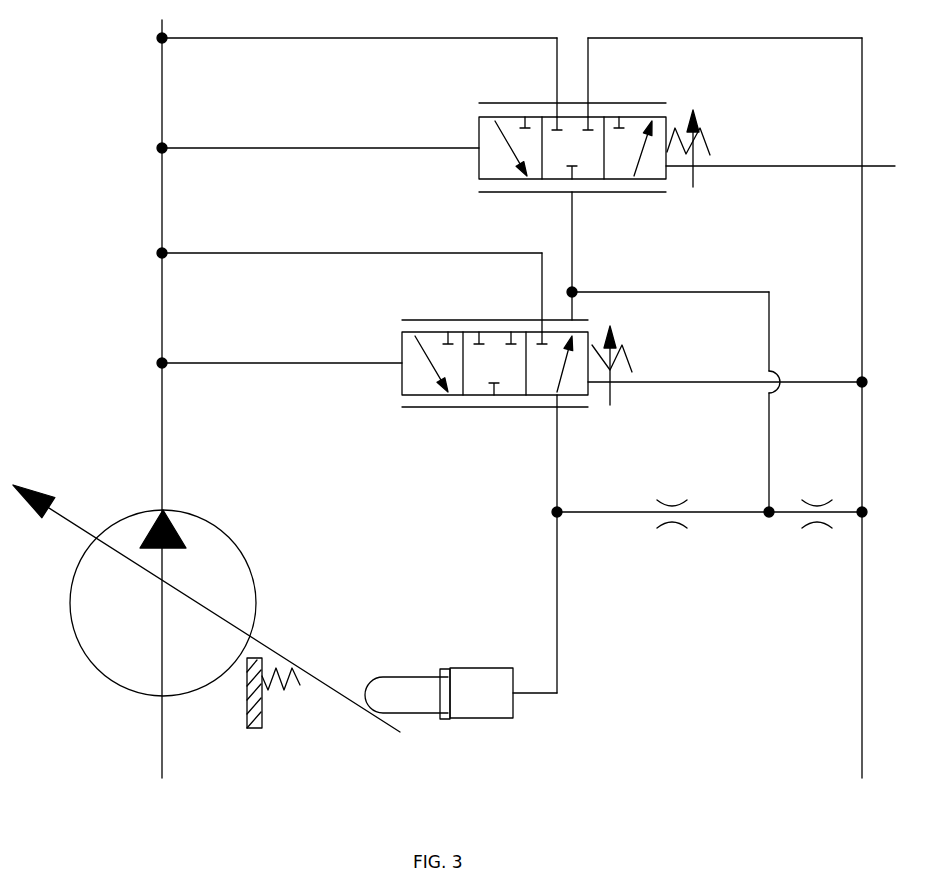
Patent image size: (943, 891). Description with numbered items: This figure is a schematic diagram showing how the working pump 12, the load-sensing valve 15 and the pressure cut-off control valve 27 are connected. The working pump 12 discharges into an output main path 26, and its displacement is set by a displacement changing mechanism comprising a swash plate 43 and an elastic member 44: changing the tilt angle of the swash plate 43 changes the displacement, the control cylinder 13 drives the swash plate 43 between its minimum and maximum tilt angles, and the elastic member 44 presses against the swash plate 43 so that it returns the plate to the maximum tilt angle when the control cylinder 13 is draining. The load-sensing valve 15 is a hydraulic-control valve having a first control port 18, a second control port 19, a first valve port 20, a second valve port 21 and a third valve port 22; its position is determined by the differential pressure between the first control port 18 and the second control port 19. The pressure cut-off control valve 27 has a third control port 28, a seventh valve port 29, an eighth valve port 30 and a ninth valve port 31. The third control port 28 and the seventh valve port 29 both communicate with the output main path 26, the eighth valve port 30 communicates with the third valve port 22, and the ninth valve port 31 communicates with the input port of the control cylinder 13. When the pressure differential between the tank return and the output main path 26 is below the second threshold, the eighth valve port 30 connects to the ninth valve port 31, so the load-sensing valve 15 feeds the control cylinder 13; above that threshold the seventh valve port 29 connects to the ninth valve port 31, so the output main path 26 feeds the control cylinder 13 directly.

The working pump 12 is at (237, 562).
The control cylinder 13 is at (405, 682).
The load-sensing valve 15 is at (478, 137).
The first control port 18 is at (478, 162).
The second control port 19 is at (667, 176).
The first valve port 20 is at (557, 103).
The second valve port 21 is at (589, 103).
The third valve port 22 is at (573, 195).
The output main path 26 is at (162, 335).
The pressure cut-off control valve 27 is at (402, 340).
The third control port 28 is at (402, 372).
The seventh valve port 29 is at (542, 320).
The eighth valve port 30 is at (575, 320).
The ninth valve port 31 is at (557, 398).
The swash plate 43 is at (53, 495).
The elastic member 44 is at (285, 658).